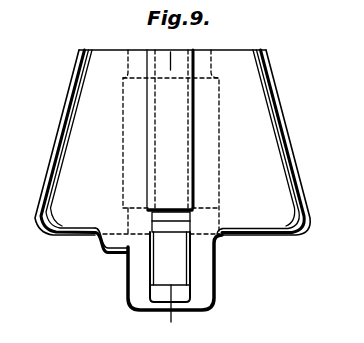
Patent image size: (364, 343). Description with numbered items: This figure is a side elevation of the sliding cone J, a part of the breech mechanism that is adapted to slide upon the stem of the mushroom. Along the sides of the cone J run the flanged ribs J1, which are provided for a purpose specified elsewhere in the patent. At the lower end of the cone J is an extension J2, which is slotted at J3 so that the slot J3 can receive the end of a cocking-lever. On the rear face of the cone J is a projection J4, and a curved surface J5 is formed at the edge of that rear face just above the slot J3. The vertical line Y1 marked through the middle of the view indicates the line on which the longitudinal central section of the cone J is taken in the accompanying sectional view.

The cone J is at (172, 142).
The flanged ribs J1 is at (299, 160).
The extension J2 is at (216, 277).
The slot J3 is at (153, 270).
The projection J4 is at (118, 251).
The curved surface J5 is at (170, 221).
The section line Y1 is at (176, 182).